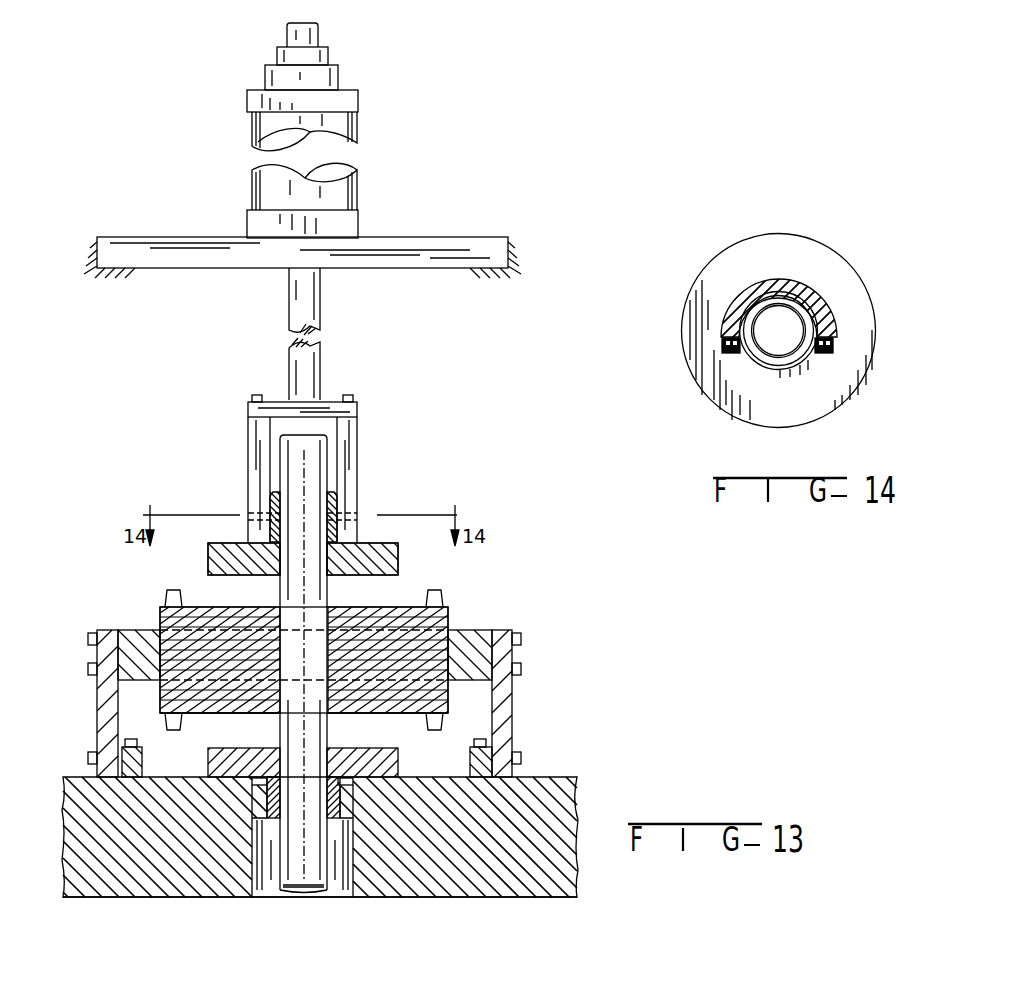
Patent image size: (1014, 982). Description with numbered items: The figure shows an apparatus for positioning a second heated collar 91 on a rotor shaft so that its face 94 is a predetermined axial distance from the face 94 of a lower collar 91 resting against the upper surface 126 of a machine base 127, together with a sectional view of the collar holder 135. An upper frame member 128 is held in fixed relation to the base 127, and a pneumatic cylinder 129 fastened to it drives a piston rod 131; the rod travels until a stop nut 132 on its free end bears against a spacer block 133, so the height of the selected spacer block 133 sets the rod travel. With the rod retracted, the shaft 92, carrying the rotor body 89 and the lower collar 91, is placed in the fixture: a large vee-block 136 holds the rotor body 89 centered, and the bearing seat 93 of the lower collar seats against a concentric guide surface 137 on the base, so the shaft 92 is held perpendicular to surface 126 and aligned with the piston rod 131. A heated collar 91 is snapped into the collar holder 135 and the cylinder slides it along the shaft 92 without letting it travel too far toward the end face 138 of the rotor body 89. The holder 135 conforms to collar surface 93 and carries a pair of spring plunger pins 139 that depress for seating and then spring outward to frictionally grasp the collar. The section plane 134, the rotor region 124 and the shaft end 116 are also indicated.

In FIG. 13, the stop nut 132 is at (320, 55).
In FIG. 13, the spacer block 133 is at (270, 77).
In FIG. 13, the upper frame member 128 is at (190, 248).
In FIG. 13, the pneumatic cylinder 129 is at (345, 228).
In FIG. 13, the piston rod 131 is at (313, 308).
In FIG. 13, the collar holder 135 is at (357, 446).
In FIG. 14, the collar holder 135 is at (810, 298).
In FIG. 13, the shaft 92 is at (287, 588).
In FIG. 13, the spring plunger pins 139 is at (268, 510).
In FIG. 14, the spring plunger pins 139 is at (720, 352).
In FIG. 13, the upper bearing plate 134 is at (348, 540).
In FIG. 13, the collar face 94 is at (212, 545).
In FIG. 14, the collar face 94 is at (853, 352).
In FIG. 13, the collar 91 is at (398, 560).
In FIG. 14, the collar 91 is at (688, 292).
In FIG. 13, the end face of rotor body 138 is at (355, 607).
In FIG. 13, the rotor body 89 is at (450, 612).
In FIG. 13, the rotor end face 124 is at (345, 713).
In FIG. 13, the vee-block 136 is at (135, 640).
In FIG. 13, the surface of machine base 126 is at (545, 777).
In FIG. 13, the machine base 127 is at (493, 890).
In FIG. 13, the concentric guide surface 137 is at (275, 820).
In FIG. 13, the bearing seat 93 is at (340, 800).
In FIG. 14, the bearing seat 93 is at (780, 370).
In FIG. 13, the shaft end 116 is at (305, 893).